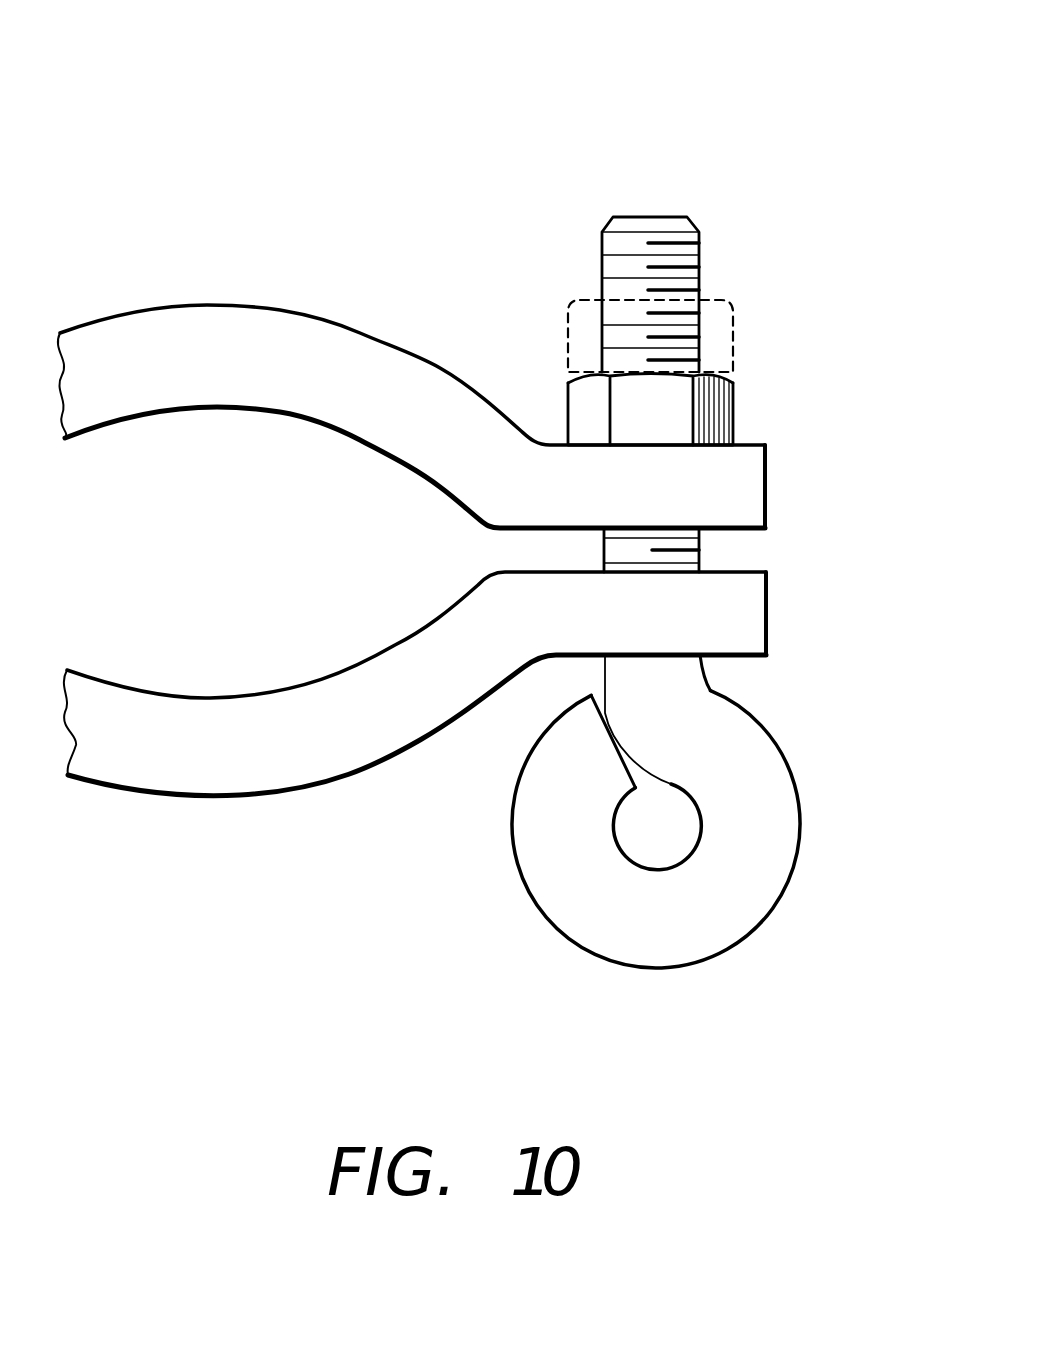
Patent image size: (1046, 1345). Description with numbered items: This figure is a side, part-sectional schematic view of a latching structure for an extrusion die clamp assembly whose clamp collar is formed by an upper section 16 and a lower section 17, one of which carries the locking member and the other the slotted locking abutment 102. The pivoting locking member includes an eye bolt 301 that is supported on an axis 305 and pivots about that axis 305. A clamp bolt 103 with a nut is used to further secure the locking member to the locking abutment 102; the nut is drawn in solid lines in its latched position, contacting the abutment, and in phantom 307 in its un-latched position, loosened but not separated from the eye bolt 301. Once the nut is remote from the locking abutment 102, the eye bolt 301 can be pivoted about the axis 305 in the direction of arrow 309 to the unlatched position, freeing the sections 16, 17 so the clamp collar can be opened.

The upper section 16 is at (162, 308).
The lower section 17 is at (108, 788).
The locking abutment 102 is at (772, 465).
The clamp bolt 103 is at (692, 143).
The eye bolt 301 is at (700, 548).
The axis 305 is at (783, 897).
The nut (phantom) 307 is at (733, 333).
The arrow 309 is at (712, 232).